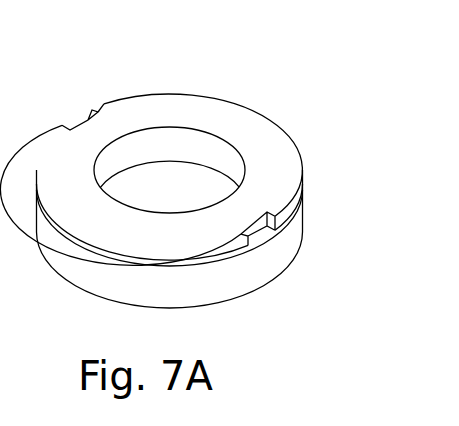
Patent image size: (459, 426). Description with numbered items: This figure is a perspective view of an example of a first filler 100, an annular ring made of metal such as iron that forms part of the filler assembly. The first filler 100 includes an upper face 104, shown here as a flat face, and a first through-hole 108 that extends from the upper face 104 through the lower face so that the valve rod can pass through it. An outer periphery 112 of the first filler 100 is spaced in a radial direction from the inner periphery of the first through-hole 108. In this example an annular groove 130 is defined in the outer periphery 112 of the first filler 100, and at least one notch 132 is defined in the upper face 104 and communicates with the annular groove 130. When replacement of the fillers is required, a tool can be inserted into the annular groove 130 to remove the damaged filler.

The first filler 100 is at (162, 110).
The upper face 104 is at (245, 128).
The first through-hole 108 is at (195, 187).
The outer periphery 112 is at (285, 256).
The annular groove 130 is at (285, 222).
The notch 132 is at (82, 122).